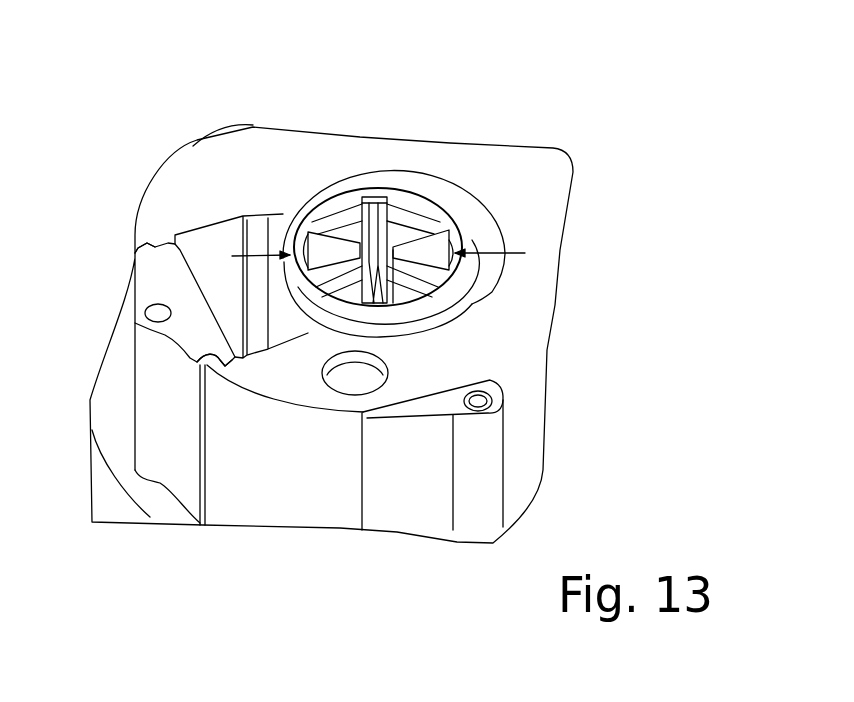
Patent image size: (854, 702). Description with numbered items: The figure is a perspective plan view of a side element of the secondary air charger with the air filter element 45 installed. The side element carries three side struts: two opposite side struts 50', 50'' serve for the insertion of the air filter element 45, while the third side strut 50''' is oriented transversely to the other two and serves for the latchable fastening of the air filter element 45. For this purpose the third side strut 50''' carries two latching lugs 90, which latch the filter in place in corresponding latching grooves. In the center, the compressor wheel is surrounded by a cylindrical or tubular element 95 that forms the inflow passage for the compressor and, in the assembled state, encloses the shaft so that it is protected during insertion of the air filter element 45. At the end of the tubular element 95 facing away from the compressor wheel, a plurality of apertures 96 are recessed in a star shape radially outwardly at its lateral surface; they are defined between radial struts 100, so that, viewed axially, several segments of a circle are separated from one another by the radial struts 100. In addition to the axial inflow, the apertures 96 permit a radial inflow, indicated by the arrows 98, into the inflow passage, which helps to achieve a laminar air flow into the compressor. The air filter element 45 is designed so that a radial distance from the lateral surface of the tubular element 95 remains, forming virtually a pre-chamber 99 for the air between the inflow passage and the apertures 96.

The air filter element 45 is at (552, 193).
The side strut 50' is at (209, 82).
The side strut 50'' is at (433, 488).
The third side strut 50''' is at (127, 304).
The latching lug 90 is at (148, 247).
The tubular element 95 is at (472, 302).
The aperture 96 is at (421, 290).
The arrows 98 is at (343, 209).
The pre-chamber 99 is at (477, 223).
The radial strut 100 is at (410, 205).